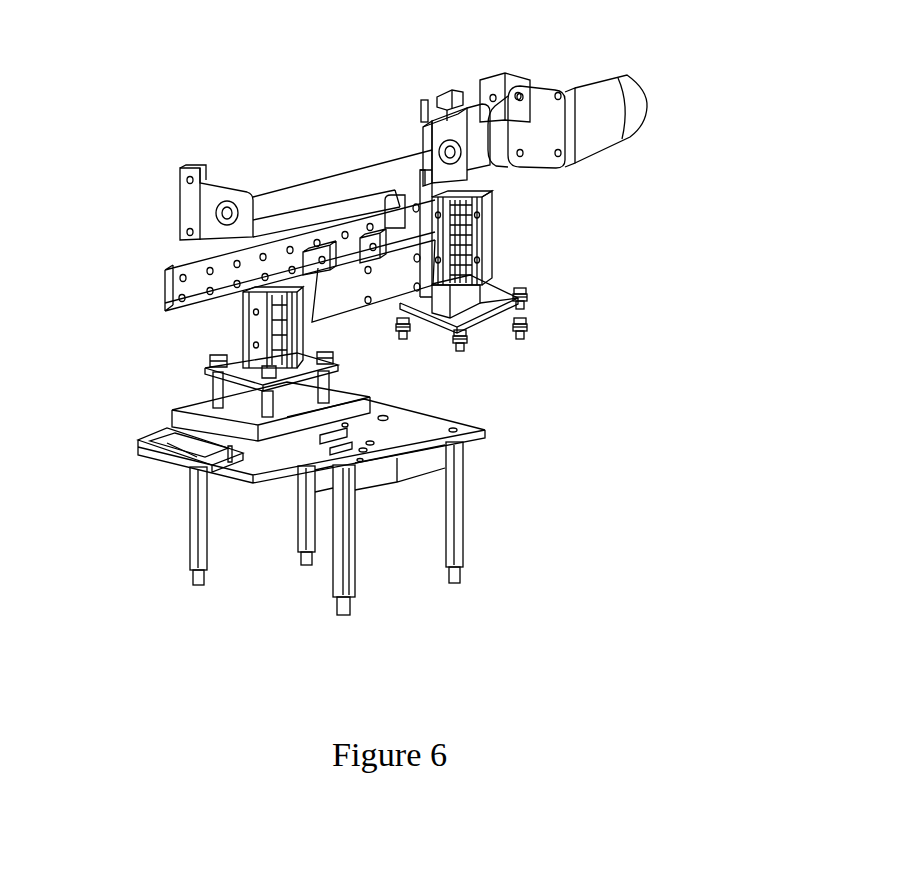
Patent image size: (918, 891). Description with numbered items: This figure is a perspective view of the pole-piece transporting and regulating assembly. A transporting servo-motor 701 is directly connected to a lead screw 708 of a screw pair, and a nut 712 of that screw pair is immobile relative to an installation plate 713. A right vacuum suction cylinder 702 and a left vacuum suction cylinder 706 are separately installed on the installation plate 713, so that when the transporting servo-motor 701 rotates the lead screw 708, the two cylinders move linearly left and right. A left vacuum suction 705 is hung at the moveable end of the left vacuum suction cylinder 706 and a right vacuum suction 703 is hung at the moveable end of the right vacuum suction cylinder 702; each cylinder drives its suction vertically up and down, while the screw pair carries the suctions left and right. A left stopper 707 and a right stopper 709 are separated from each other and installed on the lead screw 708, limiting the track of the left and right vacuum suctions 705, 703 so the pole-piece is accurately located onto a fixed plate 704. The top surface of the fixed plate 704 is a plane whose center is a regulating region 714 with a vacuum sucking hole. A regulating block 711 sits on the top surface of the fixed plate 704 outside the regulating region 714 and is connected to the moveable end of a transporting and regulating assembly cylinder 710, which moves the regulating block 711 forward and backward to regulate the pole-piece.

The transporting servo-motor 701 is at (605, 118).
The right vacuum suction cylinder 702 is at (490, 235).
The right vacuum suction 703 is at (495, 322).
The fixed plate 704 is at (425, 432).
The left vacuum suction 705 is at (228, 405).
The left vacuum suction cylinder 706 is at (255, 325).
The left stopper 707 is at (193, 210).
The lead screw 708 is at (290, 195).
The right stopper 709 is at (487, 85).
The transporting and regulating assembly cylinder 710 is at (373, 477).
The regulating block 711 is at (152, 452).
The nut 712 is at (427, 112).
The installation plate 713 is at (388, 242).
The regulating region 714 is at (230, 452).